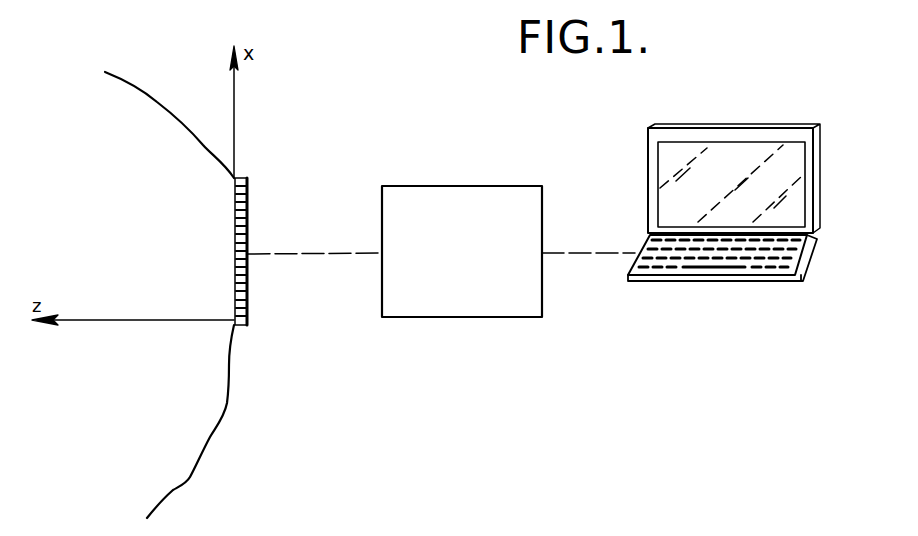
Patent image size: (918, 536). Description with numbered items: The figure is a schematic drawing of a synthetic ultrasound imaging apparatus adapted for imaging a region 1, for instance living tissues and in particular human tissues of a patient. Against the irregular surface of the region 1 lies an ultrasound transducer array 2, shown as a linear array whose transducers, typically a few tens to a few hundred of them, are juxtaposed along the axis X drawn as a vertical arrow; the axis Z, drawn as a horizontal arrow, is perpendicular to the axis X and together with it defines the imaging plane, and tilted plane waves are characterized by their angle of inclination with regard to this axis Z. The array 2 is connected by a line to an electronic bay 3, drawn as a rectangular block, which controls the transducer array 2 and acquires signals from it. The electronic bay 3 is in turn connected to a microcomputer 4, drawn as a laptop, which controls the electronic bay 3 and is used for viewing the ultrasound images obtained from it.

The region 1 is at (180, 398).
The ultrasound transducer array 2 is at (248, 295).
The electronic bay 3 is at (482, 186).
The microcomputer 4 is at (727, 282).